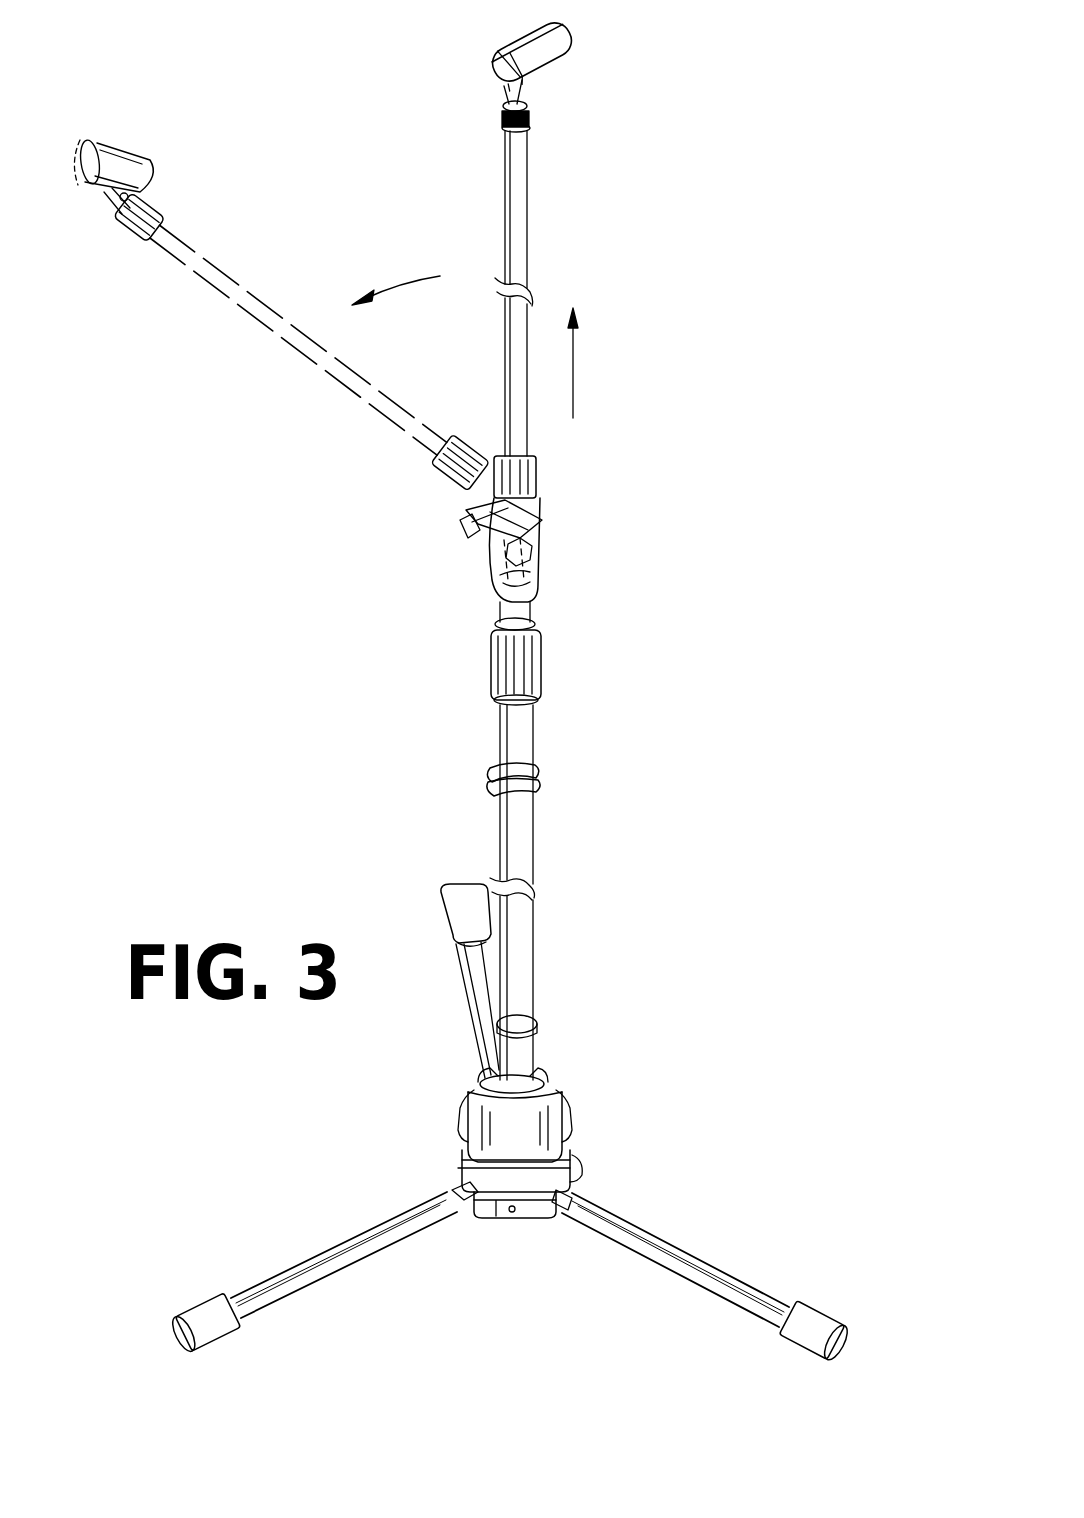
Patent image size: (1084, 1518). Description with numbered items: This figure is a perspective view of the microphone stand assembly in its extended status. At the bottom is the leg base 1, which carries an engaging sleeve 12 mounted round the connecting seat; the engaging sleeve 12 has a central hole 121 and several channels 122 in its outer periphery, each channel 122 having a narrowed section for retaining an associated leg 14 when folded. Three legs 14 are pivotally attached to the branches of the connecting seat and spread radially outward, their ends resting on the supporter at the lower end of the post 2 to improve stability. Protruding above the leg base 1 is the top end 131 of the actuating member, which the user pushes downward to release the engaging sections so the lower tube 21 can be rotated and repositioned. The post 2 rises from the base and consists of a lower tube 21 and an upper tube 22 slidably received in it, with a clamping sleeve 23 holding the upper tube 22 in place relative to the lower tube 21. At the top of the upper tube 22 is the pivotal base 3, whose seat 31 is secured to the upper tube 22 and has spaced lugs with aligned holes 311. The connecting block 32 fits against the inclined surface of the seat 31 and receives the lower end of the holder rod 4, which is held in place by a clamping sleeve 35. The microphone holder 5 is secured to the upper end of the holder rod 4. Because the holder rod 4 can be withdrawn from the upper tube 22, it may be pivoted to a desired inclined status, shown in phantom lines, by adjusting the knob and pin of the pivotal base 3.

The leg base 1 is at (569, 1143).
The engaging sleeve 12 is at (567, 1078).
The central hole 121 is at (498, 1070).
The channel 122 is at (558, 1165).
The top end 131 is at (527, 1053).
The leg 14 is at (677, 1253).
The post 2 is at (570, 841).
The lower tube 21 is at (533, 977).
The upper tube 22 is at (518, 615).
The clamping sleeve 23 is at (537, 676).
The pivotal base 3 is at (377, 370).
The seat 31 is at (530, 588).
The aligned holes 311 is at (514, 576).
The connecting block 32 is at (528, 512).
The clamping sleeve 35 is at (497, 452).
The holder rod 4 is at (523, 200).
The microphone holder 5 is at (548, 62).